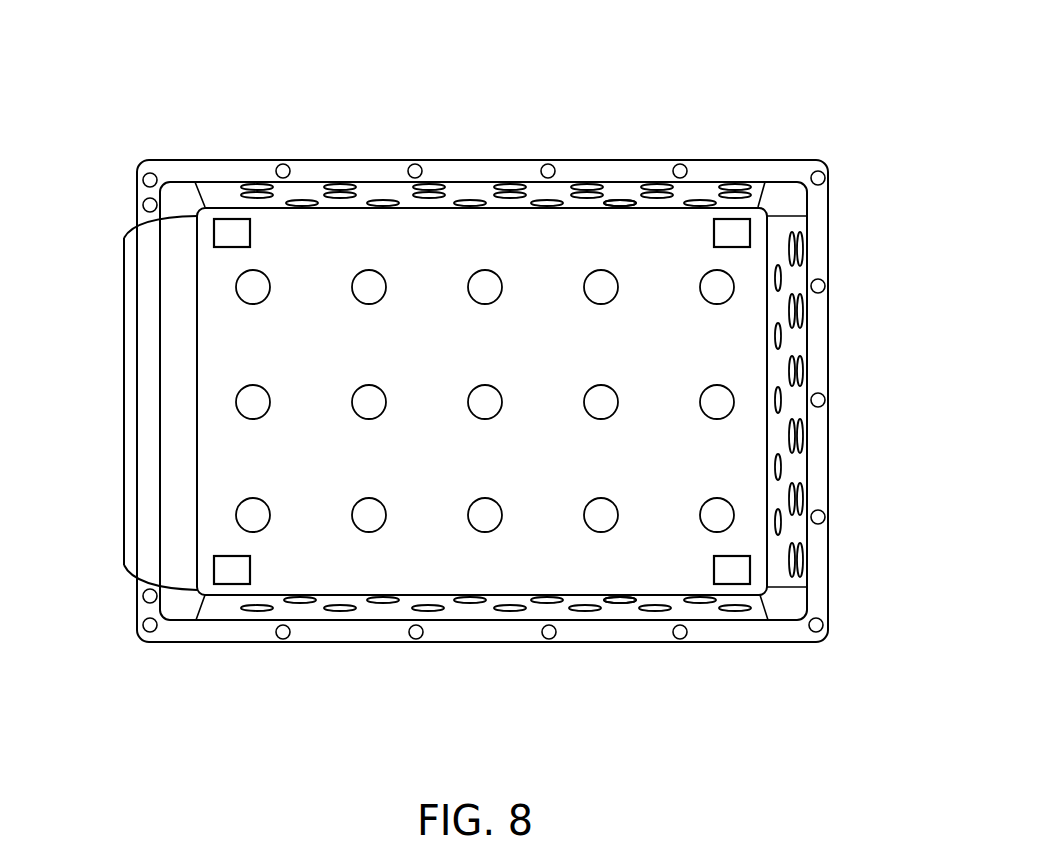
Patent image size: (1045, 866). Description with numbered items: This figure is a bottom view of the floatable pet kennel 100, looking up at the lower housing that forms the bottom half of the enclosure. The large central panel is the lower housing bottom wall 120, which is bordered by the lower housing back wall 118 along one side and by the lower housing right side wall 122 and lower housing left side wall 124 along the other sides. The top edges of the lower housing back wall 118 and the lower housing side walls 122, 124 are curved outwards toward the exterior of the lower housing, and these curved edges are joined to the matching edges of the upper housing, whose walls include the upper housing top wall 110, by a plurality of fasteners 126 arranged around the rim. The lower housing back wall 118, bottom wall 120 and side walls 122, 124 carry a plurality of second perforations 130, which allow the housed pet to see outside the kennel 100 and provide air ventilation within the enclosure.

The floatable pet kennel 100 is at (148, 78).
The upper housing top wall 110 is at (733, 468).
The lower housing back wall 118 is at (797, 338).
The lower housing bottom wall 120 is at (478, 568).
The lower housing right side wall 122 is at (378, 612).
The lower housing left side wall 124 is at (467, 192).
The fasteners 126 is at (818, 632).
The second perforations 130 is at (620, 200).